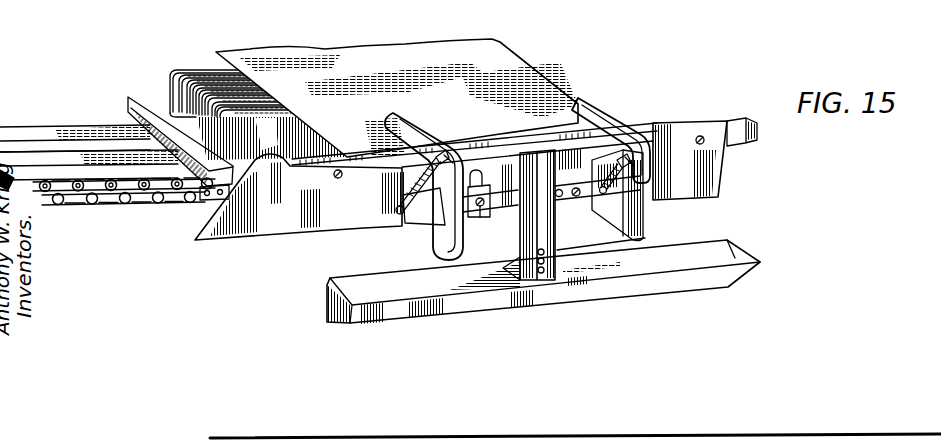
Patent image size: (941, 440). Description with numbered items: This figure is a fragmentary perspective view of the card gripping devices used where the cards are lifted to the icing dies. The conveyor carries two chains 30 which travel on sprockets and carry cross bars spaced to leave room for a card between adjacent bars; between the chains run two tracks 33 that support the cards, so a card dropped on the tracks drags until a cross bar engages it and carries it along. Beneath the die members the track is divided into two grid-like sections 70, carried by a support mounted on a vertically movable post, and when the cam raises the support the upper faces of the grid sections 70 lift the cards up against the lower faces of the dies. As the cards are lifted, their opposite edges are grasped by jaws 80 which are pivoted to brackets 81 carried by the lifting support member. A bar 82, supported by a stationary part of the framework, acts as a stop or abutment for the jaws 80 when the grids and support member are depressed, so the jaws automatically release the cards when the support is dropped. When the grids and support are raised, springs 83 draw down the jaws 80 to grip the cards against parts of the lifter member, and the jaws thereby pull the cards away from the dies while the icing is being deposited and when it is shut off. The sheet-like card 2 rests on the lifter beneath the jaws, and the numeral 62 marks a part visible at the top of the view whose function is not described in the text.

The sheet 2 is at (440, 63).
The chain 30 is at (143, 206).
The track 33 is at (70, 137).
The member 62 is at (550, 9).
The grid-like section 70 is at (237, 72).
The jaw 80 is at (415, 133).
The bracket 81 is at (617, 220).
The bar 82 is at (505, 170).
The spring 83 is at (443, 199).